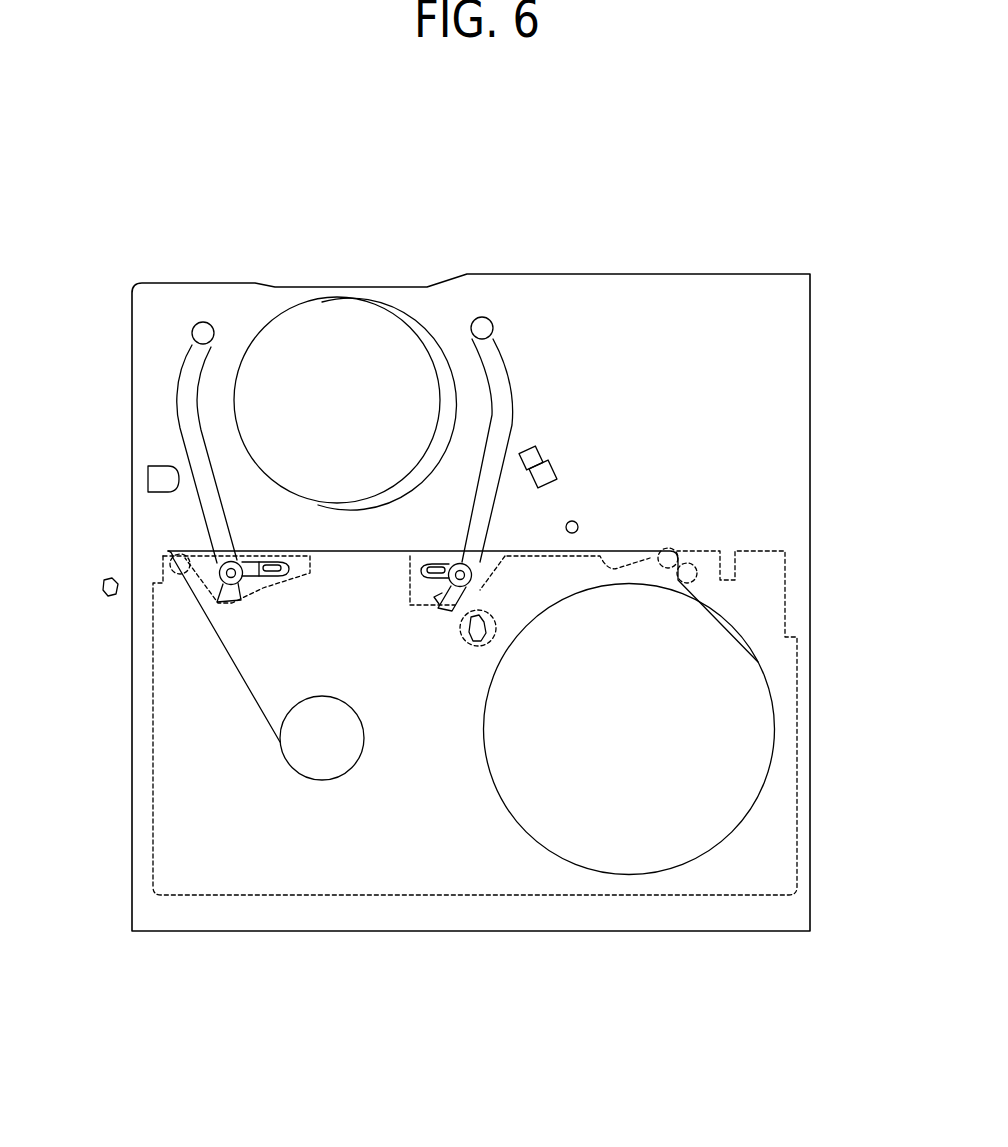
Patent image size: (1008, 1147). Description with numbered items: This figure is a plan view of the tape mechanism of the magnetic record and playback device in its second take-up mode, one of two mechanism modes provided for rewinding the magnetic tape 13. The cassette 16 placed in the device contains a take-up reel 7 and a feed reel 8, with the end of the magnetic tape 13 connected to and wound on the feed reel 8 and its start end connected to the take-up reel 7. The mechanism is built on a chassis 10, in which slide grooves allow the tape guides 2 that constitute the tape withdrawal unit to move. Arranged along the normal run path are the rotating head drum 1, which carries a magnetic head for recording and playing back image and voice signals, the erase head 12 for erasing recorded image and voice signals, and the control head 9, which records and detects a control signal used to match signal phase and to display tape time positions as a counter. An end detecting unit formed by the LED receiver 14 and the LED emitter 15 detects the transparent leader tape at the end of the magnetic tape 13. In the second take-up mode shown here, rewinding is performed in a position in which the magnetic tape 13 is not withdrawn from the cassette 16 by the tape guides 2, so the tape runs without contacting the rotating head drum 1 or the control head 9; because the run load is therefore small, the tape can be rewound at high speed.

The rotating head drum 1 is at (335, 326).
The tape guides 2 is at (232, 562).
The take-up reel 7 is at (630, 777).
The feed reel 8 is at (325, 765).
The control head 9 is at (537, 453).
The chassis 10 is at (208, 292).
The erase head 12 is at (150, 478).
The magnetic tape 13 is at (632, 549).
The LED receiver 14 is at (105, 594).
The LED emitter 15 is at (478, 628).
The cassette 16 is at (150, 787).